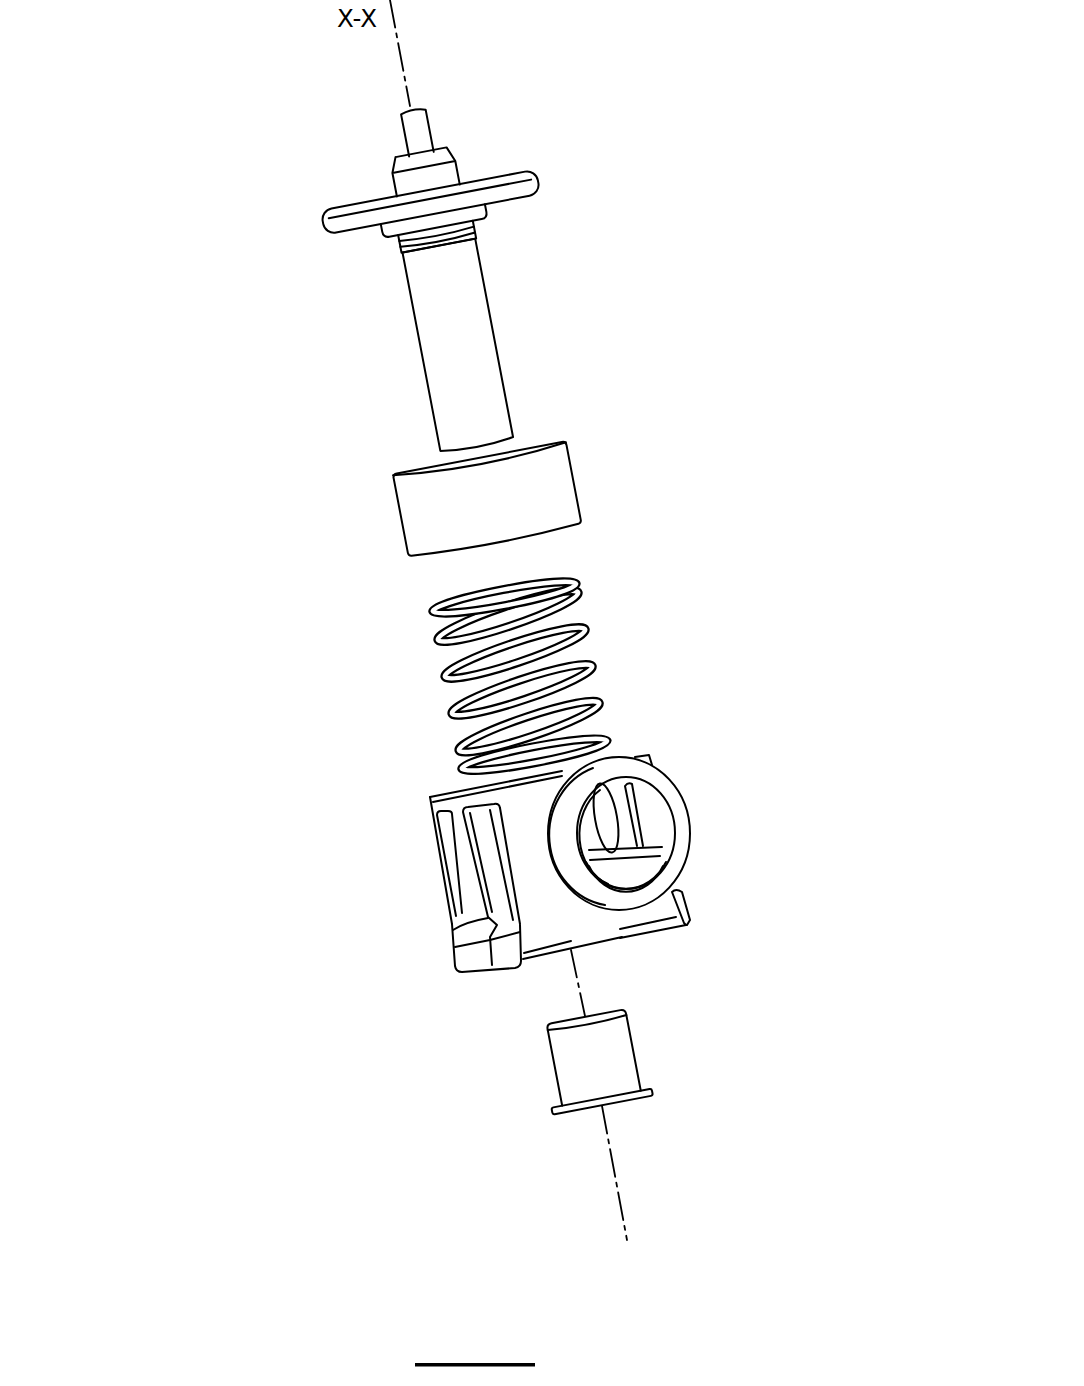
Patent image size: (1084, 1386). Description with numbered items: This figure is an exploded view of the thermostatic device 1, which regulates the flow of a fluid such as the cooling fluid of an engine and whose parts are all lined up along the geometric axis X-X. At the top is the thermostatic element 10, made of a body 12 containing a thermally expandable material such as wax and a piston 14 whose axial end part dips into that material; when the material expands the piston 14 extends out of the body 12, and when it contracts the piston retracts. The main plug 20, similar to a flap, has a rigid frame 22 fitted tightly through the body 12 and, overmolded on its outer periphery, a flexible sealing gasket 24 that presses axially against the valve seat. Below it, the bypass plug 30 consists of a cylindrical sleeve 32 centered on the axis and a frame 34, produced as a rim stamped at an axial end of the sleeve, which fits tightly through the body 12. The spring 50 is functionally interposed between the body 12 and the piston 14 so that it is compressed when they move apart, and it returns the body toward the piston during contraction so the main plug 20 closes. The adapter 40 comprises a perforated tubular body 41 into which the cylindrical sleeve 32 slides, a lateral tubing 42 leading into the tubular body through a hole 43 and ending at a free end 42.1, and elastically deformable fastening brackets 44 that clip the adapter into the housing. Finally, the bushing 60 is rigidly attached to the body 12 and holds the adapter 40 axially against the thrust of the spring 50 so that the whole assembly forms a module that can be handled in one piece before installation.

The thermostatic device 1 is at (282, 106).
The thermostatic element 10 is at (550, 281).
The body 12 is at (474, 332).
The piston 14 is at (418, 136).
The main plug 20 is at (375, 235).
The rigid frame 22 is at (378, 236).
The flexible sealing gasket 24 is at (320, 227).
The bypass plug 30 is at (466, 477).
The cylindrical sleeve 32 is at (540, 498).
The frame 34 is at (422, 462).
The adapter 40 is at (551, 891).
The tubular body 41 is at (540, 928).
The lateral tubing 42 is at (577, 880).
The free end 42.1 is at (682, 846).
The hole 43 is at (660, 819).
The fastening brackets 44 is at (457, 923).
The spring 50 is at (432, 712).
The bushing 60 is at (535, 1066).